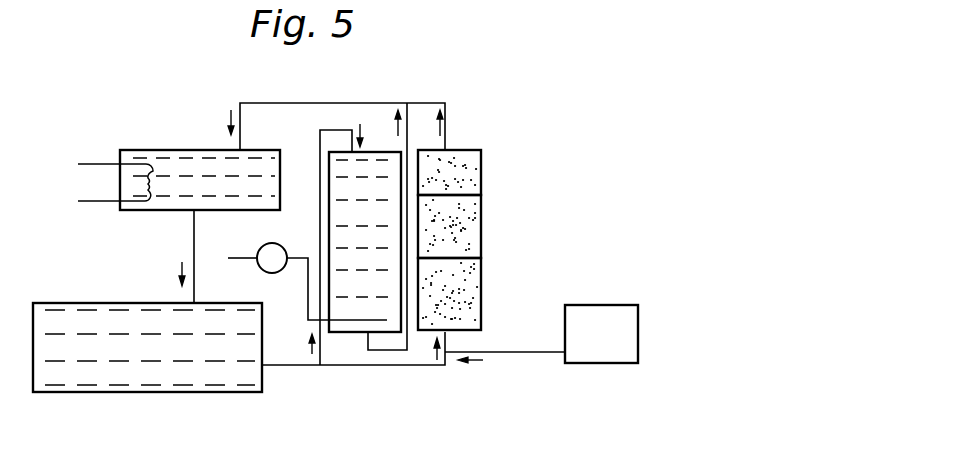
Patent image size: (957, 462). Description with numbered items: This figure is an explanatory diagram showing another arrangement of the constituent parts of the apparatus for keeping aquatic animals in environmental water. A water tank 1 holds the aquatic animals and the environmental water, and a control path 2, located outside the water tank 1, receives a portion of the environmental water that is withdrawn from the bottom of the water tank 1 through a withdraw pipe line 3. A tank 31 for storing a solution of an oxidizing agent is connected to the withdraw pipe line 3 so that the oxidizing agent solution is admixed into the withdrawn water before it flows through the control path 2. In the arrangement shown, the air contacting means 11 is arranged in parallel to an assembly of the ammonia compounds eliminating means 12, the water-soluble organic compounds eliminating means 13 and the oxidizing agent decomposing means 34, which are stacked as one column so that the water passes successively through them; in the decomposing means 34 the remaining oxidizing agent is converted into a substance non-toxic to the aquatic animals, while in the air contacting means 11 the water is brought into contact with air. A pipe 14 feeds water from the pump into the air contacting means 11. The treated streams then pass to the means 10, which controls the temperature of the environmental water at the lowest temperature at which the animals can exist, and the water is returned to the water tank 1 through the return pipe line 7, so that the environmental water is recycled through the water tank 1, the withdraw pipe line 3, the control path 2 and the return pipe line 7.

The water tank 1 is at (143, 380).
The control path 2 is at (452, 100).
The withdraw pipe line 3 is at (300, 368).
The return pipe line 7 is at (193, 248).
The temperature controlling means 10 is at (151, 166).
The air contacting means 11 is at (285, 244).
The ammonia compounds eliminating means 12 is at (468, 288).
The water-soluble organic compounds eliminating means 13 is at (468, 227).
The pipe 14 is at (308, 283).
The oxidizing agent solution tank 31 is at (611, 312).
The oxidizing agent decomposing means 34 is at (468, 168).